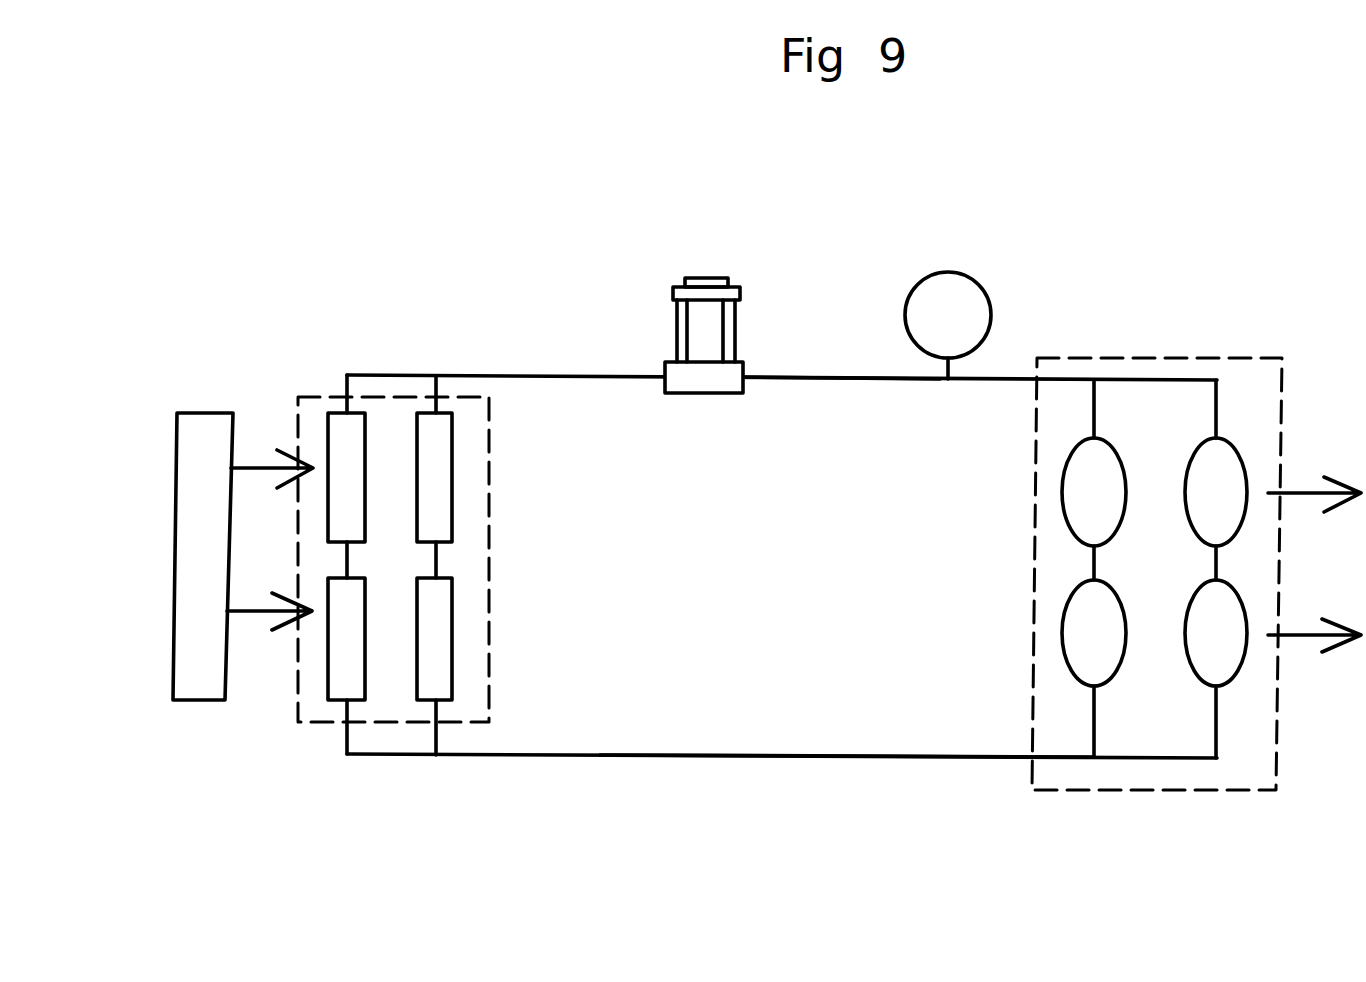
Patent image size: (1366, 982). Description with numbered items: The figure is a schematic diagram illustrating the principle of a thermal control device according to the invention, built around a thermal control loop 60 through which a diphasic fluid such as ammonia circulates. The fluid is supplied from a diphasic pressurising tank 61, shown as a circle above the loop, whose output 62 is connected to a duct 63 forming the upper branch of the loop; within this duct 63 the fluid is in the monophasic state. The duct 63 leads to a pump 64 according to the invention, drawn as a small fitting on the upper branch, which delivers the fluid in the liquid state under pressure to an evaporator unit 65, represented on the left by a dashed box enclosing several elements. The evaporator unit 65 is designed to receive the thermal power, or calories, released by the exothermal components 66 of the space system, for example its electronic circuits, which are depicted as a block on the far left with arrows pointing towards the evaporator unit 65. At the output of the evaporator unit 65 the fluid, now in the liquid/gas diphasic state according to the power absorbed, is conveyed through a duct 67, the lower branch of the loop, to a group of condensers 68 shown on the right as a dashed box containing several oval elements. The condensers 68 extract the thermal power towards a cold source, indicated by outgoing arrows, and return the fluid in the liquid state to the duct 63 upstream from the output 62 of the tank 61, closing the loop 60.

The thermal control loop 60 is at (625, 688).
The diphasic pressurising tank 61 is at (937, 285).
The output 62 is at (945, 379).
The duct 63 is at (819, 377).
The pump 64 is at (690, 318).
The evaporator unit 65 is at (475, 598).
The exothermal components 66 is at (203, 692).
The duct 67 is at (854, 756).
The group of condensers 68 is at (1072, 790).